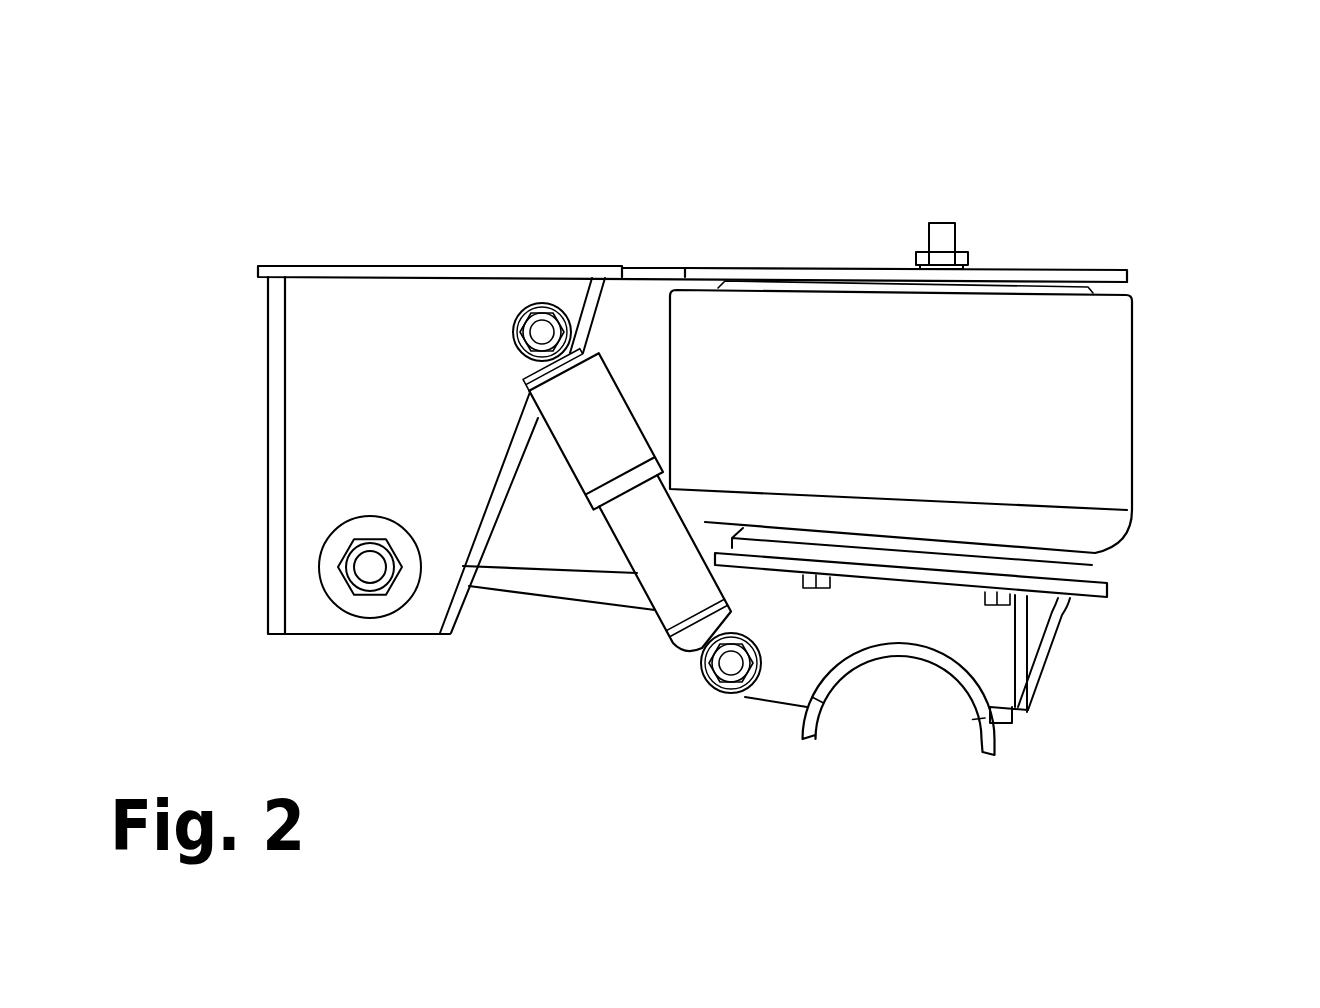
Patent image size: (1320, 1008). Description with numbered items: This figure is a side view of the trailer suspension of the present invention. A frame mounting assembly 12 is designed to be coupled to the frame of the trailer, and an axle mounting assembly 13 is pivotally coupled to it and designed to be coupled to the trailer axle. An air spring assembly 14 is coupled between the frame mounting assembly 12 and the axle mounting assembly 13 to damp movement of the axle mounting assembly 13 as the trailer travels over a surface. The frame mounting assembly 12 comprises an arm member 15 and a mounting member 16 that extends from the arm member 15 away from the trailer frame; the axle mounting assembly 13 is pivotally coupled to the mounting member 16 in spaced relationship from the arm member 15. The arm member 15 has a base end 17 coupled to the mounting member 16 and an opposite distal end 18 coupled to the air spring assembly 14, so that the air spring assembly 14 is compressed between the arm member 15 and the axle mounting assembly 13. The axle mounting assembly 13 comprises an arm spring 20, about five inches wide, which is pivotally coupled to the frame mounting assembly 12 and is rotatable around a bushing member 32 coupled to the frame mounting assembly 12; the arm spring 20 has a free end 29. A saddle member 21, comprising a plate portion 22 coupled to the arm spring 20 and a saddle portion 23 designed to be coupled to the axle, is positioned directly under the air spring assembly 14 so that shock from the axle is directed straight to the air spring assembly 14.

The frame mounting assembly 12 is at (225, 373).
The axle mounting assembly 13 is at (761, 729).
The air spring assembly 14 is at (1183, 372).
The arm member 15 is at (610, 267).
The mounting member 16 is at (313, 495).
The base end 17 is at (278, 265).
The distal end 18 is at (1040, 268).
The arm spring 20 is at (570, 586).
The saddle member 21 is at (992, 648).
The plate portion 22 is at (1080, 588).
The saddle portion 23 is at (913, 660).
The free end 29 is at (1105, 590).
The bushing member 32 is at (547, 517).